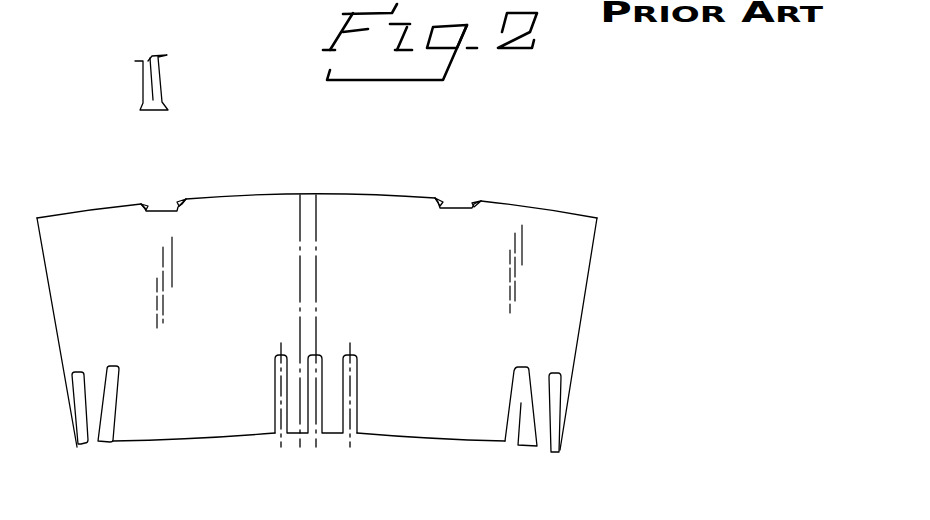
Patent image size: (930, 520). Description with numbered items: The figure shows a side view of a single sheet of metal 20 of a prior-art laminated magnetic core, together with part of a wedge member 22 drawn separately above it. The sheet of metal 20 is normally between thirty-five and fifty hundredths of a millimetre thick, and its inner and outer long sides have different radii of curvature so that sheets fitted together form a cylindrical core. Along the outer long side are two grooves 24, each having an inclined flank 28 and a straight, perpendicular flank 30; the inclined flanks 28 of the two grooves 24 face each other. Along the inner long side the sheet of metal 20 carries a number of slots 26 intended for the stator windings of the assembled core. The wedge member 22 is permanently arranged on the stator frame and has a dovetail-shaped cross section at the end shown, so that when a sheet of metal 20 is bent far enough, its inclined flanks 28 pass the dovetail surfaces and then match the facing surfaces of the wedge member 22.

The sheet of metal 20 is at (556, 210).
The wedge member 22 is at (162, 102).
The groove 24 is at (162, 205).
The slot 26 is at (357, 403).
The inclined flank 28 is at (185, 201).
The straight, perpendicular flank 30 is at (142, 205).